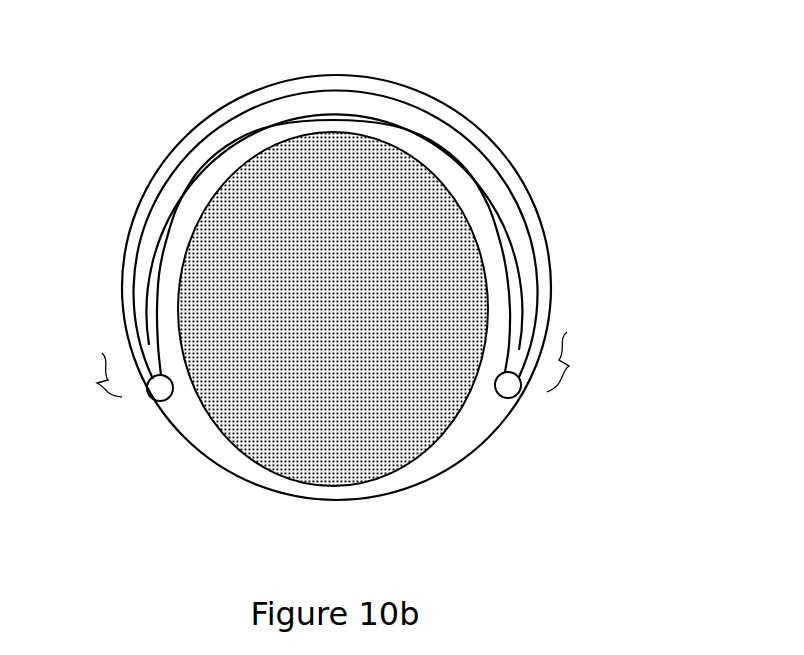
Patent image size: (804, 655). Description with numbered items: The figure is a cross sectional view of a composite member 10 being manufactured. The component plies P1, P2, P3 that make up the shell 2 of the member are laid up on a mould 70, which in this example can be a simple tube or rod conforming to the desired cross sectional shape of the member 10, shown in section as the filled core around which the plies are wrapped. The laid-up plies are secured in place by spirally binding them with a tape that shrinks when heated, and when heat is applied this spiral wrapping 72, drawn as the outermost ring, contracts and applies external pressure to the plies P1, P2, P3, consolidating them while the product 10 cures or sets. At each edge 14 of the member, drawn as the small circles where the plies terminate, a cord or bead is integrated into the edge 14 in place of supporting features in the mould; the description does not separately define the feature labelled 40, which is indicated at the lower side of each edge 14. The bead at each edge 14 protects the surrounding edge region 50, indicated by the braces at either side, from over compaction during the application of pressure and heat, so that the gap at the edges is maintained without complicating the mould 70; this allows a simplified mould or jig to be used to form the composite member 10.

The member 10 is at (524, 56).
The shell 2 is at (201, 149).
The spiral wrapping 72 is at (507, 160).
The component ply P1 is at (526, 230).
The component ply P2 is at (521, 273).
The component ply P3 is at (510, 302).
The mould 70 is at (423, 405).
The edge 14 is at (508, 385).
The bead region 40 is at (519, 410).
The edge region 50 is at (337, 369).